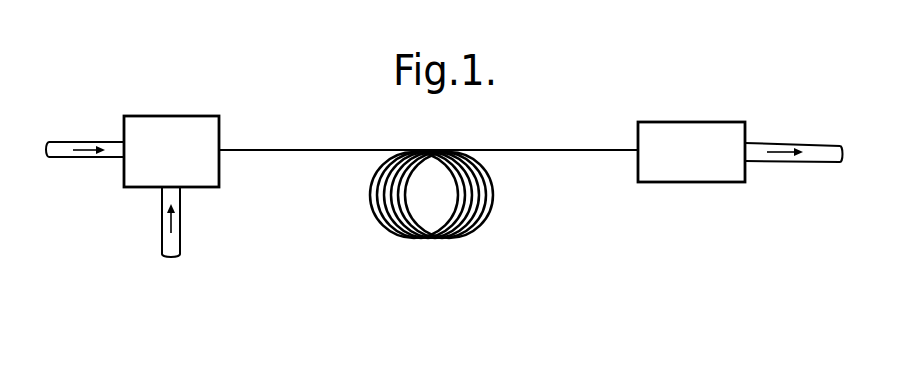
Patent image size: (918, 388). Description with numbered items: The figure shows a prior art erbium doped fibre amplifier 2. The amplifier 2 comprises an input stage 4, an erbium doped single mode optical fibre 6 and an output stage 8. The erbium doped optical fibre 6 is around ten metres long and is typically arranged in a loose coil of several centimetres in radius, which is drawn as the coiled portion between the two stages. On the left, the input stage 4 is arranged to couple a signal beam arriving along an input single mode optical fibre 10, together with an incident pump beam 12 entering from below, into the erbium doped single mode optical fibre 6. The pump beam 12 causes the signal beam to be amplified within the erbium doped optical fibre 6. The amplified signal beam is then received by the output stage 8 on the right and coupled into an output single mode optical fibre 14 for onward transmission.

The erbium doped fibre amplifier 2 is at (518, 250).
The input stage 4 is at (165, 128).
The erbium doped single mode optical fibre 6 is at (280, 152).
The output stage 8 is at (678, 138).
The input single mode optical fibre 10 is at (68, 146).
The incident pump beam 12 is at (168, 242).
The output single mode optical fibre 14 is at (812, 150).